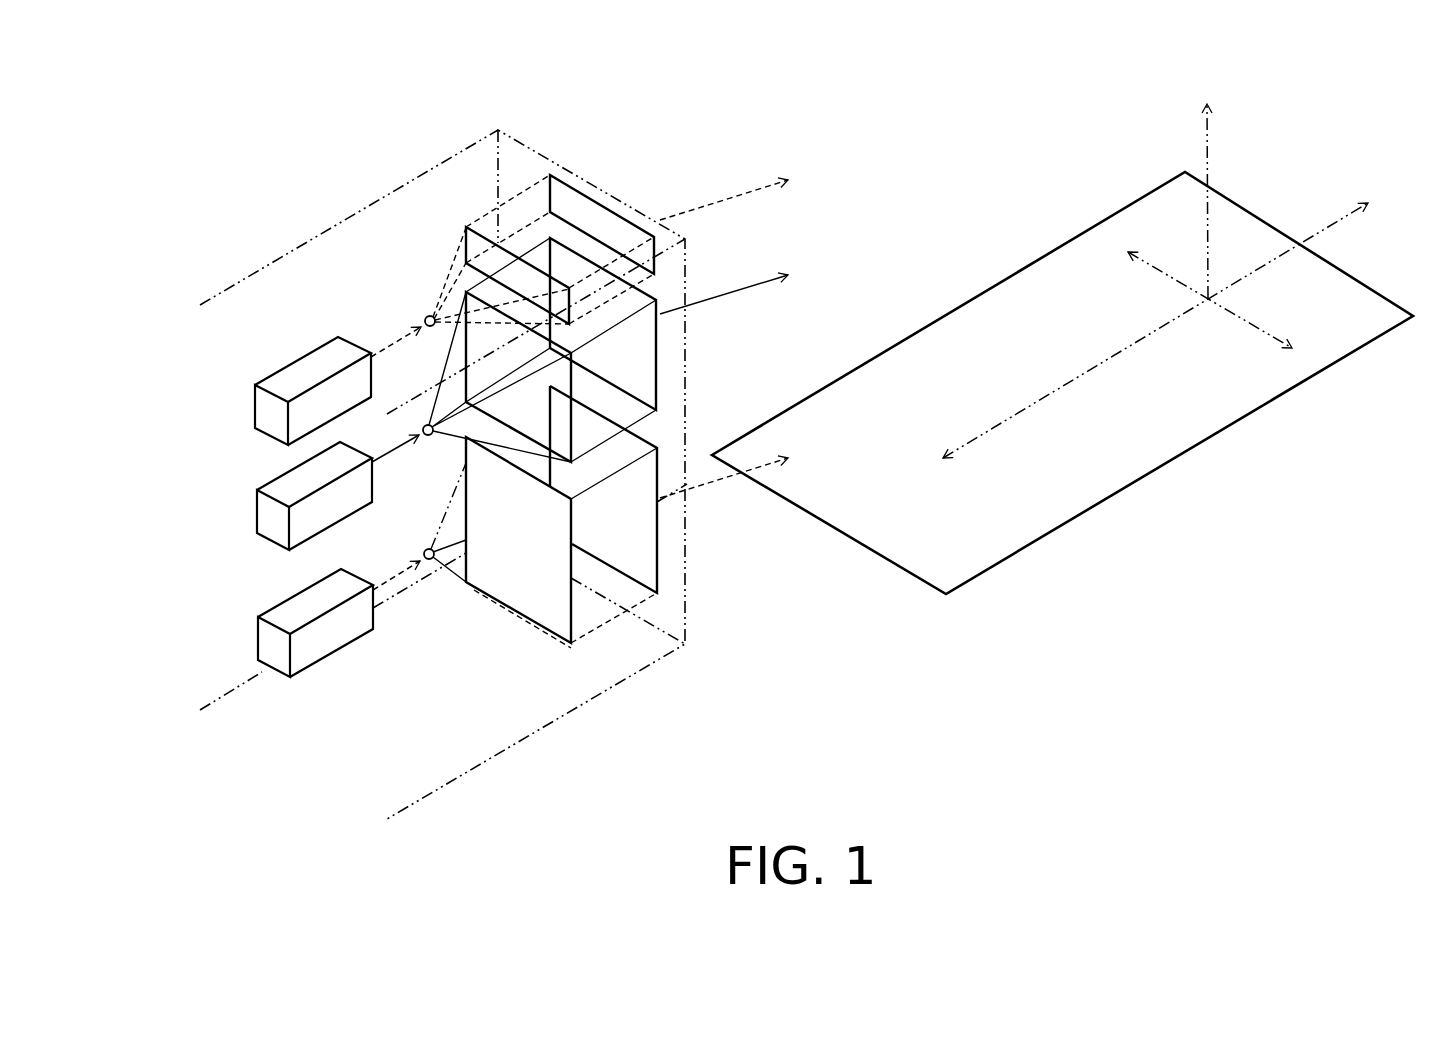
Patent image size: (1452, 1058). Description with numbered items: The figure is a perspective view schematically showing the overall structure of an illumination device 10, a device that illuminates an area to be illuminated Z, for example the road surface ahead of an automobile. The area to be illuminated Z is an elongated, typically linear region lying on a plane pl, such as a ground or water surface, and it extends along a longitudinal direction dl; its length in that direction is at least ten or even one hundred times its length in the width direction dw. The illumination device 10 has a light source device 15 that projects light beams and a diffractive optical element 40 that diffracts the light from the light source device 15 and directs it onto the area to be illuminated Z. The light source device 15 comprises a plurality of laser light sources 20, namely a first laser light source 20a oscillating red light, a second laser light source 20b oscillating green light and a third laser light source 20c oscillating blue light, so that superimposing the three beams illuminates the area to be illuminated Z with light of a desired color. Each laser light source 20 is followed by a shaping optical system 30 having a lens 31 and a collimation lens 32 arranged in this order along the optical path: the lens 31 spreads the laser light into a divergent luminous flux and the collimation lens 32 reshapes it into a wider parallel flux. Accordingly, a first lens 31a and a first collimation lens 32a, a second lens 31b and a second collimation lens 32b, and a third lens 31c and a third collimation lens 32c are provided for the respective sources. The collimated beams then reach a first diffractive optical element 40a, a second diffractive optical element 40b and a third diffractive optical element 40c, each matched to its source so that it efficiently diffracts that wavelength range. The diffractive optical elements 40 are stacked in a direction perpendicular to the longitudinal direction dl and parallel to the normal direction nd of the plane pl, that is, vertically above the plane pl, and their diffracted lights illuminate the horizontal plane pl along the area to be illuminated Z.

The illumination device 10 is at (345, 160).
The light source device 15 is at (338, 714).
The laser light source 20 is at (284, 502).
The first laser light source 20a is at (259, 644).
The second laser light source 20b is at (258, 515).
The third laser light source 20c is at (256, 410).
The shaping optical system 30 is at (551, 459).
The lens 31 is at (424, 438).
The first lens 31a is at (430, 560).
The second lens 31b is at (428, 436).
The third lens 31c is at (425, 318).
The collimation lens 32 is at (574, 459).
The first collimation lens 32a is at (538, 605).
The second collimation lens 32b is at (560, 378).
The third collimation lens 32c is at (466, 250).
The diffractive optical element 40 is at (631, 389).
The first diffractive optical element 40a is at (647, 555).
The second diffractive optical element 40b is at (647, 380).
The third diffractive optical element 40c is at (603, 215).
The normal direction nd is at (1203, 180).
The longitudinal direction dl is at (1155, 324).
The width direction dw is at (1219, 300).
The plane pl is at (1273, 516).
The area to be illuminated Z is at (1058, 498).